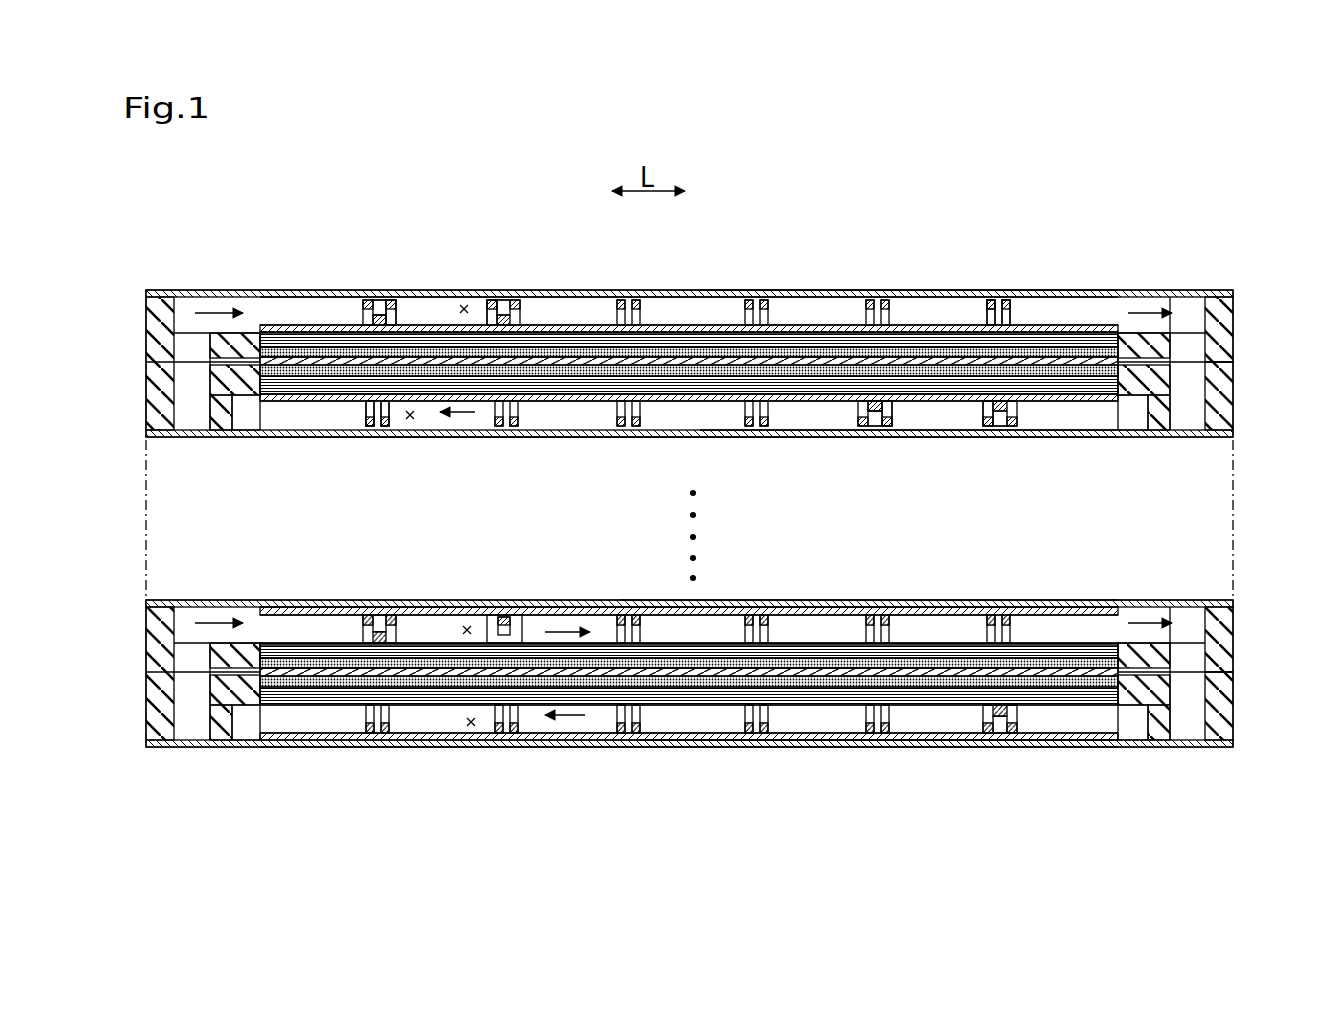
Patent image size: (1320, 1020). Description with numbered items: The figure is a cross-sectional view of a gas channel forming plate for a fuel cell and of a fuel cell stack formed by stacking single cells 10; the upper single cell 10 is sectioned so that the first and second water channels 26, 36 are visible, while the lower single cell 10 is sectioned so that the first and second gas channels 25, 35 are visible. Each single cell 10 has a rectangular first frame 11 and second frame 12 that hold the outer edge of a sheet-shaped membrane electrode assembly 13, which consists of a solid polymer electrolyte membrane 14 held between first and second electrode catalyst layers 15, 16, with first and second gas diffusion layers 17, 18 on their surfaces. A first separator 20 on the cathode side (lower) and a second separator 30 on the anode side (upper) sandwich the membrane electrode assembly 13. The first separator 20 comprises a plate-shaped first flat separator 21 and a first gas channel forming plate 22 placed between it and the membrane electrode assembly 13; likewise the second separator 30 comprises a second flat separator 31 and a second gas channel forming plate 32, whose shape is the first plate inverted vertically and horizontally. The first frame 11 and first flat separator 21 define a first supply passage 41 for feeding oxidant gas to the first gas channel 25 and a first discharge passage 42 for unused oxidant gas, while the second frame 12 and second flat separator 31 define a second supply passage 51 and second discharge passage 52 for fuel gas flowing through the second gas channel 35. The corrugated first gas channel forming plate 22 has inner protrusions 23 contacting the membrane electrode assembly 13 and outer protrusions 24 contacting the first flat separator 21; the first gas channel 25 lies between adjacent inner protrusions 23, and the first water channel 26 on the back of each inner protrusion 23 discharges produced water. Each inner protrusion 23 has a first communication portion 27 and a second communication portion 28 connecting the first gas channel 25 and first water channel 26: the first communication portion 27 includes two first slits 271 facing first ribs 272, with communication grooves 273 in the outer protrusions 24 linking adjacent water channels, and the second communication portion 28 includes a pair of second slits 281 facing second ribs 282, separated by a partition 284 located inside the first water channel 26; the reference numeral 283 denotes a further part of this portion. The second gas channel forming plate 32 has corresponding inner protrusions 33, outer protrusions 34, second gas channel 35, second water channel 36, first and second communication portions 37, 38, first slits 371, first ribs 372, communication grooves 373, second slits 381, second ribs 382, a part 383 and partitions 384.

The single cell 10 is at (1262, 287).
The first frame 11 is at (1233, 400).
The second frame 12 is at (1233, 340).
The membrane electrode assembly 13 is at (767, 258).
The solid polymer electrolyte membrane 14 is at (868, 353).
The first electrode catalyst layer 15 is at (830, 363).
The second electrode catalyst layer 16 is at (903, 342).
The first gas diffusion layer 17 is at (780, 387).
The second gas diffusion layer 18 is at (933, 335).
The first separator 20 is at (740, 483).
The first flat separator 21 is at (755, 437).
The first gas channel forming plate 22 is at (808, 405).
The inner protrusion 23 is at (541, 405).
The outer protrusion 24 is at (576, 432).
The first gas channel 25 is at (471, 727).
The first water channel 26 is at (410, 421).
The first communication portion 27 is at (362, 408).
The second communication portion 28 is at (1022, 412).
The second separator 30 is at (677, 250).
The second flat separator 31 is at (735, 292).
The second gas channel forming plate 32 is at (688, 318).
The inner protrusion 33 is at (540, 333).
The outer protrusion 34 is at (580, 292).
The second gas channel 35 is at (467, 625).
The second water channel 36 is at (464, 304).
The first communication portion 37 is at (1020, 313).
The second communication portion 38 is at (360, 306).
The first supply passage 41 is at (1133, 408).
The first discharge passage 42 is at (247, 408).
The second supply passage 51 is at (190, 310).
The second discharge passage 52 is at (1180, 310).
The first slit 271 is at (505, 430).
The first rib 272 is at (358, 430).
The communication groove 273 is at (378, 430).
The second slit 281 is at (862, 430).
The second rib 282 is at (1022, 430).
The lower holder base 283 is at (870, 430).
The partition 284 is at (890, 406).
The first slit 371 is at (1012, 297).
The first rib 372 is at (640, 300).
The communication groove 373 is at (1000, 298).
The second slit 381 is at (488, 300).
The second rib 382 is at (396, 300).
The upper holder leg 383 is at (500, 300).
The partition 384 is at (398, 300).